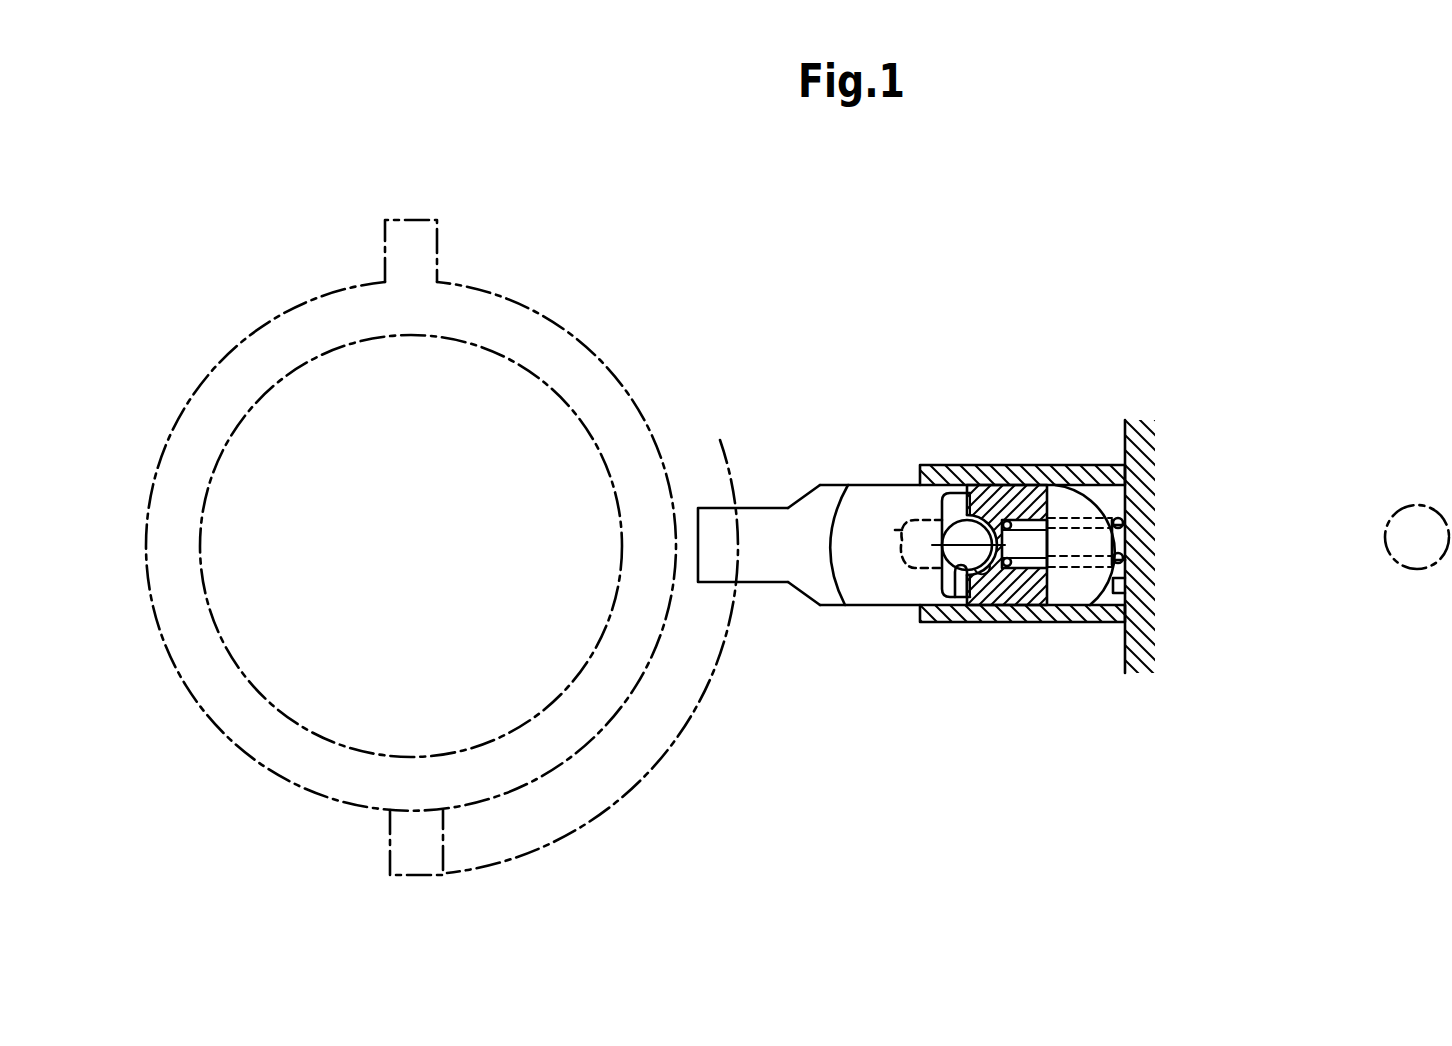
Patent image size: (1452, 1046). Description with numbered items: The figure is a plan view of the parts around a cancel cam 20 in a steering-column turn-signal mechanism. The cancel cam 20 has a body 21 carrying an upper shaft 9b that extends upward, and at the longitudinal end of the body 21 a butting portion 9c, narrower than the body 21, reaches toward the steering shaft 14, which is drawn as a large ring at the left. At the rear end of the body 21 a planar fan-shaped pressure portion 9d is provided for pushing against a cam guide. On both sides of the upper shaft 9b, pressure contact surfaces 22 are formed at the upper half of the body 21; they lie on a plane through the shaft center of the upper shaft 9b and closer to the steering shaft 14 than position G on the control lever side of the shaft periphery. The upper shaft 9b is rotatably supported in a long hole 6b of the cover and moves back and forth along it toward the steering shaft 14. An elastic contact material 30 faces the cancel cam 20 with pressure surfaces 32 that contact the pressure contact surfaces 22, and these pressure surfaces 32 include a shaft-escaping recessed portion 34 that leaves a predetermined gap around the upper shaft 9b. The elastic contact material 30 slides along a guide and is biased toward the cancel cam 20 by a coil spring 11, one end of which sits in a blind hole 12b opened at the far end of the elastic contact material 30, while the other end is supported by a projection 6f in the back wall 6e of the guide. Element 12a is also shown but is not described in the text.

The steering shaft 14 is at (314, 738).
The butting portion 9c is at (758, 517).
The cancel cam 20 is at (820, 607).
The body 21 is at (852, 484).
The coil spring 11 is at (1088, 623).
The elastic contact material 30 is at (1004, 485).
The pressure contact surfaces 22 is at (982, 606).
The pressure portion 9d is at (1105, 480).
The blind hole 12b is at (1054, 486).
The upper shaft 9b is at (903, 530).
The pressure surfaces 32 is at (947, 490).
The shaft-escaping recessed portion 34 is at (961, 604).
The position on the control lever side G is at (1010, 606).
The long hole 6b is at (912, 592).
The projection 6f is at (1128, 543).
The back wall 6e is at (1128, 603).
The pin cross section 12a is at (1413, 505).